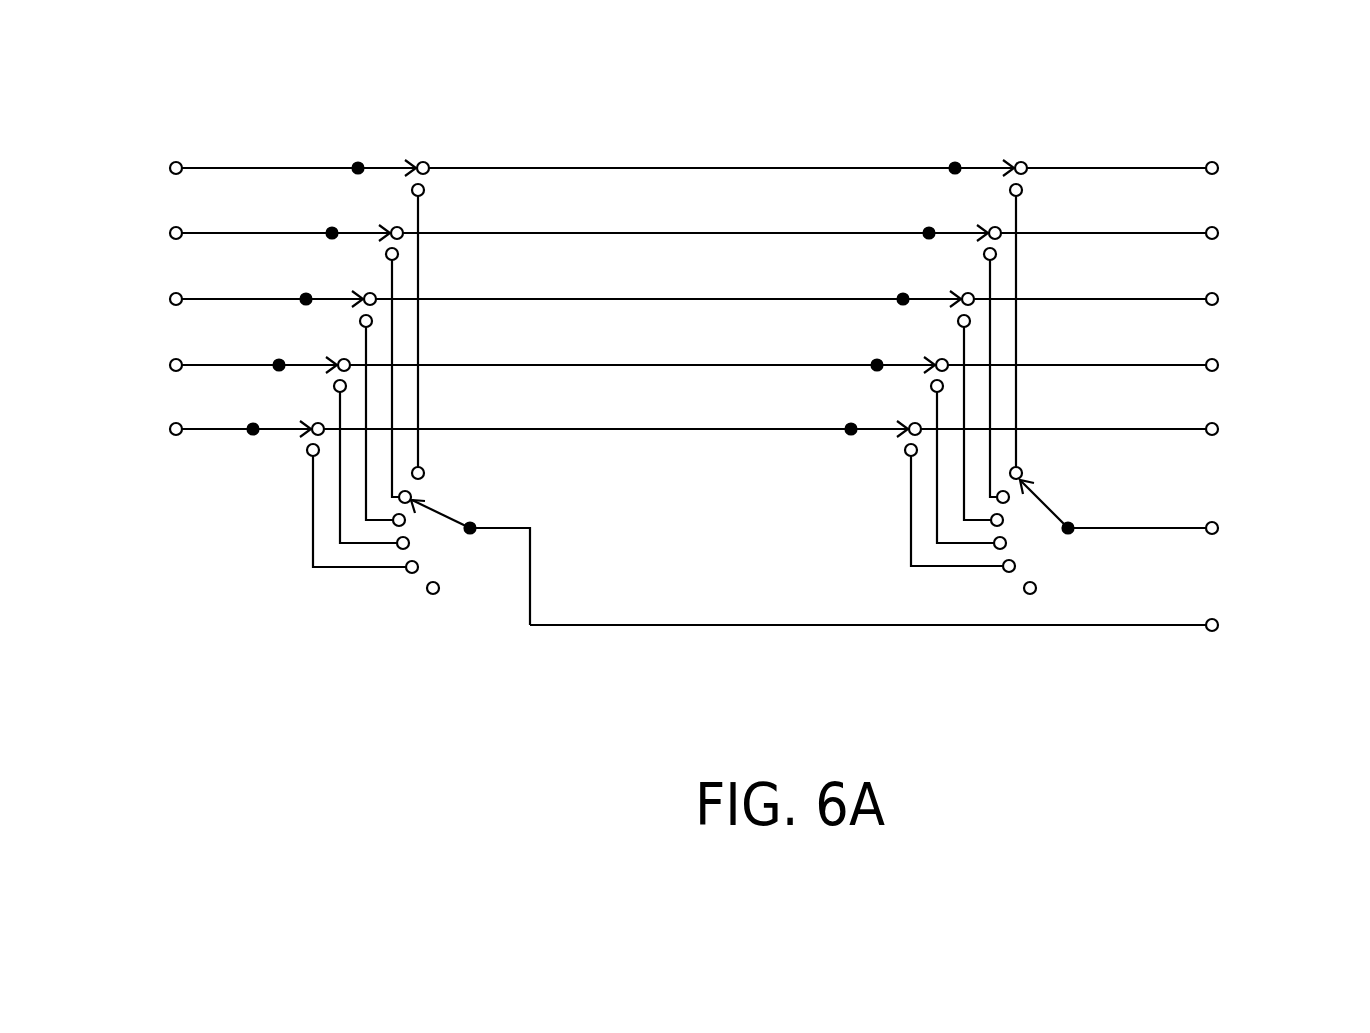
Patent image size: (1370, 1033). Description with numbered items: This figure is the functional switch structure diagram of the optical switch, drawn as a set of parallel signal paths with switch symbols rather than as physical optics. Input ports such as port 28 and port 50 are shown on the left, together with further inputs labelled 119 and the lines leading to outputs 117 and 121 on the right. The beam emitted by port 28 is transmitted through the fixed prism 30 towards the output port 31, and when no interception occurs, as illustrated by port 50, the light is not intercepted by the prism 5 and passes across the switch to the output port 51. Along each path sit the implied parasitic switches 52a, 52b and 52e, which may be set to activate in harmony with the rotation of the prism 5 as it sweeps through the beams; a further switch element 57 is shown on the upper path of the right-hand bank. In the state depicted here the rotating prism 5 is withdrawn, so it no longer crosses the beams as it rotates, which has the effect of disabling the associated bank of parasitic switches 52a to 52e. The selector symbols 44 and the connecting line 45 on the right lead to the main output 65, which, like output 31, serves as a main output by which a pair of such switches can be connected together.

The port 28 is at (168, 233).
The port 50 is at (168, 299).
The input line terminal 119 is at (168, 366).
The output line terminal 117 is at (1220, 233).
The output port 51 is at (1220, 299).
The output line terminal 121 is at (1220, 365).
The switch 52a is at (388, 165).
The switch 52b is at (358, 230).
The switch 52e is at (277, 433).
The switch 57 is at (985, 165).
The prism 5 is at (441, 546).
The fixed prism 30 is at (528, 586).
The output port 31 is at (1220, 625).
The selector switch 44 is at (1045, 520).
The connection line 45 is at (1130, 530).
The main output 65 is at (1220, 528).